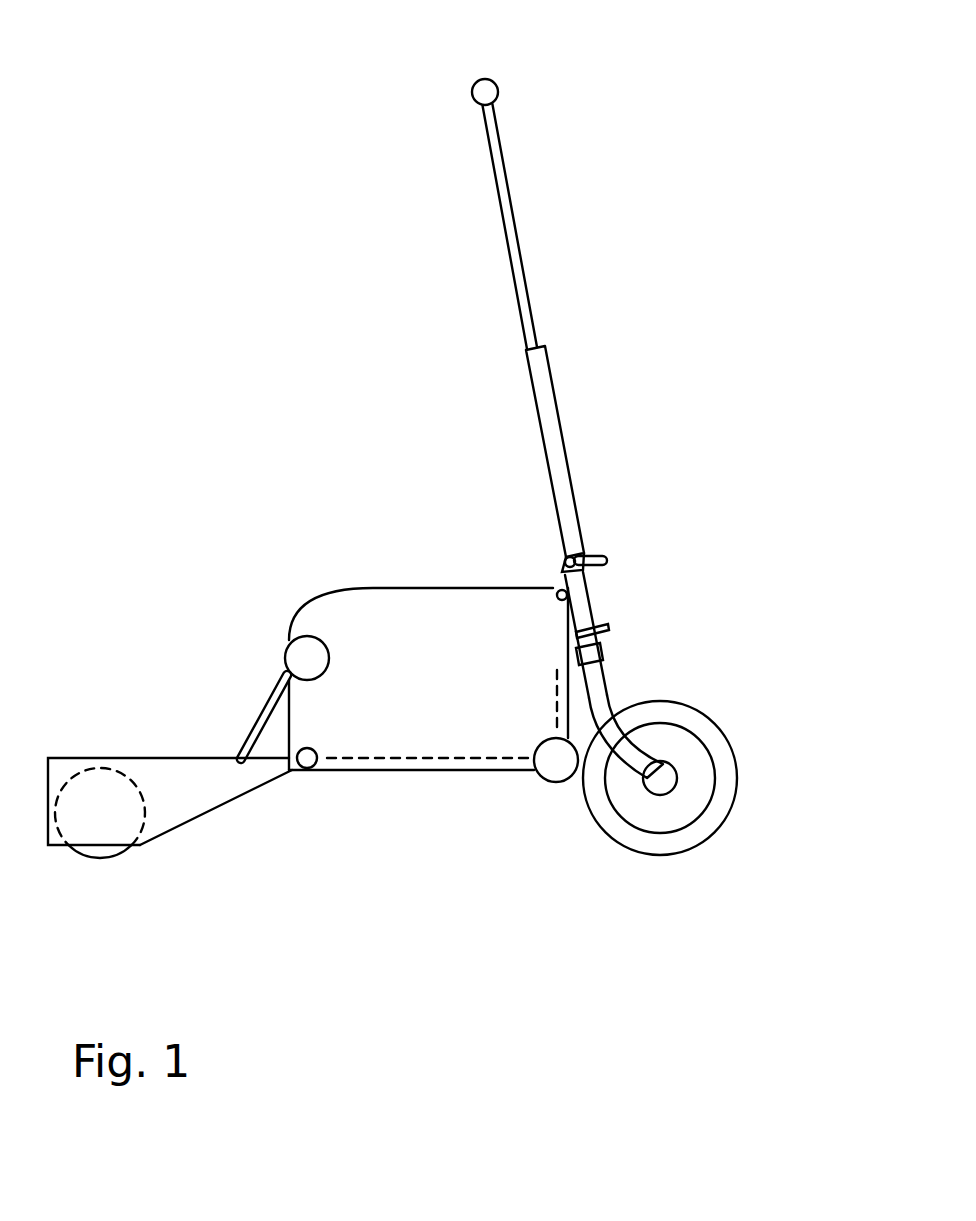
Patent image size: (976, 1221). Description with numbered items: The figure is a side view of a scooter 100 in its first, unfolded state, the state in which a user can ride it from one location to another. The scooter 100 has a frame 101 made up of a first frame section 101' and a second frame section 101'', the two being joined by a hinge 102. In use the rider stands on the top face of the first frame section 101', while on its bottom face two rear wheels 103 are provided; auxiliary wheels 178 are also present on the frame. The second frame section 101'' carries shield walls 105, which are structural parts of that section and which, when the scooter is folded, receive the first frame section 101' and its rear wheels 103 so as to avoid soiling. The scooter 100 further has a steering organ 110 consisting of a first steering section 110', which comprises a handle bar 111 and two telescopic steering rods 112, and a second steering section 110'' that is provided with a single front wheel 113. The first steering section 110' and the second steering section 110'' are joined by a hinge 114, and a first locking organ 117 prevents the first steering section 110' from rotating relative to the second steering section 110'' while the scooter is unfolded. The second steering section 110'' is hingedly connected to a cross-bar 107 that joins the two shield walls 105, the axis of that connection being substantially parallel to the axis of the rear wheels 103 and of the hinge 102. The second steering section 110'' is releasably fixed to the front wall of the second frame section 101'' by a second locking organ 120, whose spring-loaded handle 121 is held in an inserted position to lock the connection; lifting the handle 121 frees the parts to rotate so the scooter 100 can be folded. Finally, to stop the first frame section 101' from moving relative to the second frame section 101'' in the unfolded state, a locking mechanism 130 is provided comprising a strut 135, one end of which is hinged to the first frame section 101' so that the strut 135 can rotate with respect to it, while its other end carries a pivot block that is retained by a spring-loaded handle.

The scooter 100 is at (332, 410).
The frame 101 is at (293, 820).
The first frame section 101' is at (216, 859).
The second frame section 101'' is at (423, 783).
The hinge 102 is at (307, 770).
The rear wheels 103 is at (95, 852).
The shield walls 105 is at (420, 612).
The cross-bar 107 is at (557, 585).
The steering organ 110 is at (624, 398).
The first steering section 110' is at (589, 183).
The second steering section 110'' is at (671, 667).
The handle bar 111 is at (496, 84).
The telescopic steering rods 112 is at (550, 415).
The front wheel 113 is at (716, 742).
The hinge 114 is at (567, 555).
The first locking organ 117 is at (603, 552).
The second locking organ 120 is at (608, 664).
The handle 121 is at (608, 630).
The locking mechanism 130 is at (283, 640).
The strut 135 is at (262, 722).
The auxiliary wheels 178 is at (551, 770).